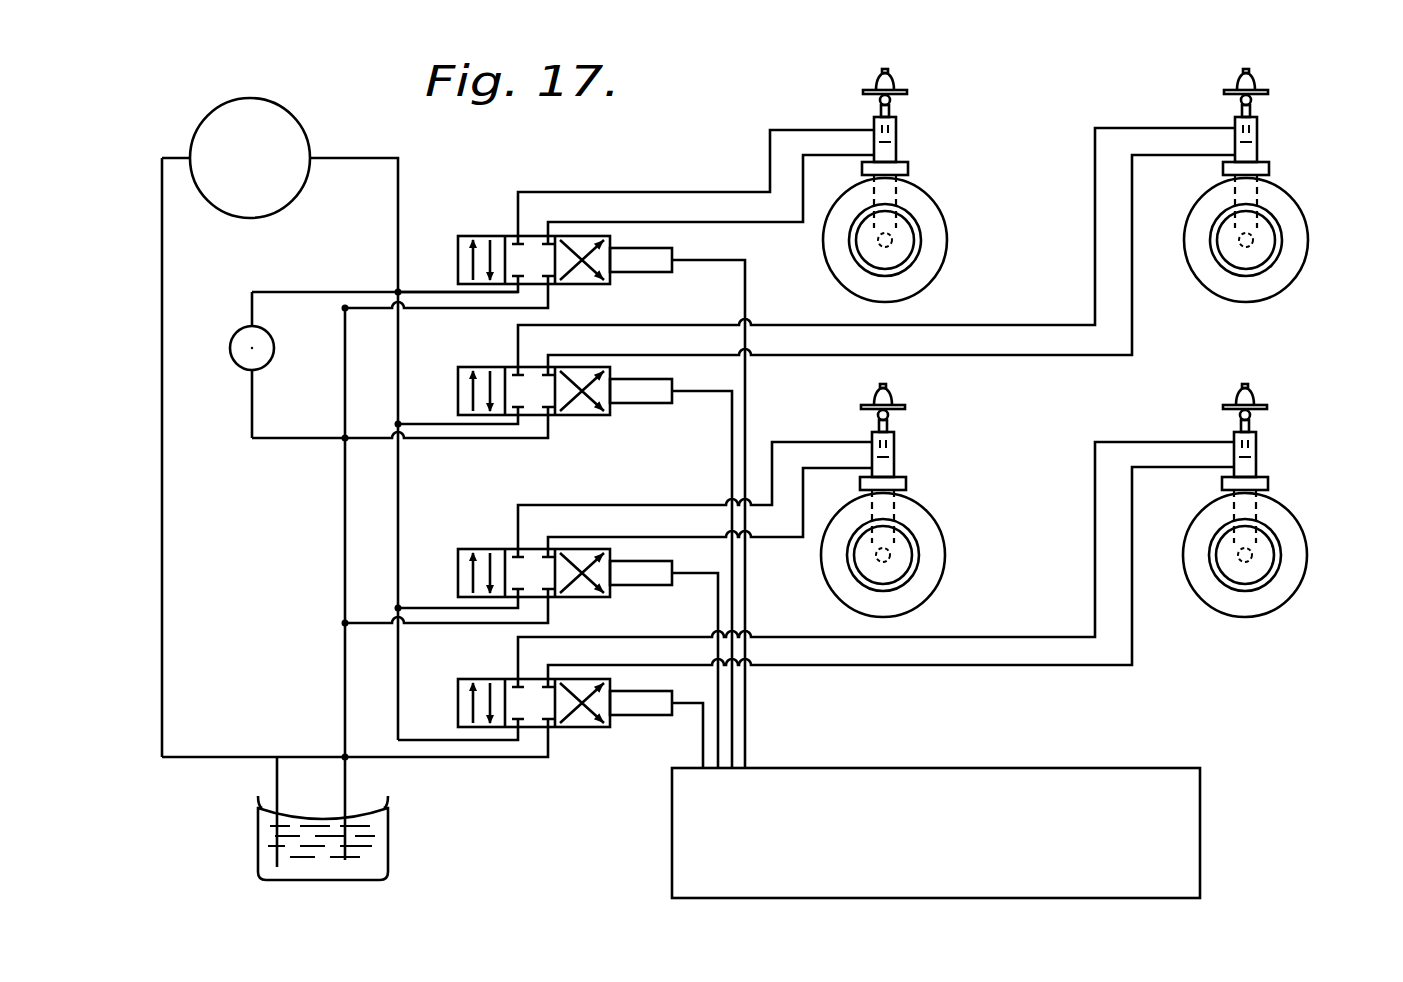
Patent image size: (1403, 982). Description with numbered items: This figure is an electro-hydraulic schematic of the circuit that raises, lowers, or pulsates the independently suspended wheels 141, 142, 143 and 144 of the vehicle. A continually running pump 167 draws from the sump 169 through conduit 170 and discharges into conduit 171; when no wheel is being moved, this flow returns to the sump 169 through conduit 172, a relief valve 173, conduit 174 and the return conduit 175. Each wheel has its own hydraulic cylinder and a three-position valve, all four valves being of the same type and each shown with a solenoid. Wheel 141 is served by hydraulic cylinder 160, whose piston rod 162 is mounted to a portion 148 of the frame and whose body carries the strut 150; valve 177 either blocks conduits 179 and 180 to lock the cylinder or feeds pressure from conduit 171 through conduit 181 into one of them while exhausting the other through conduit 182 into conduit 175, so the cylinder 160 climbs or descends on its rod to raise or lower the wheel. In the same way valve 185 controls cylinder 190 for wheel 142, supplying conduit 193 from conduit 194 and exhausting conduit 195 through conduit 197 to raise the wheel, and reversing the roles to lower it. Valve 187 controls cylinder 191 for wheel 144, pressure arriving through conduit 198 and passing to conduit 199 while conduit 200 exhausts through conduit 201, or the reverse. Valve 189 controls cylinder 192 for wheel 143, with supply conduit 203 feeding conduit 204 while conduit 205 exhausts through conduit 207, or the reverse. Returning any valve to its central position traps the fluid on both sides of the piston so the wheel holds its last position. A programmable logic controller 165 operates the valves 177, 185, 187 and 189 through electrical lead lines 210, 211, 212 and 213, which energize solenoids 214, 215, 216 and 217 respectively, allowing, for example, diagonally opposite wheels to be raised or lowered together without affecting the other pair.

The wheel 141 is at (1300, 243).
The wheel 142 is at (940, 243).
The wheel 143 is at (1300, 556).
The wheel 144 is at (938, 556).
The portion of frame 148 is at (893, 80).
The strut 150 is at (922, 192).
The hydraulic cylinder 160 is at (1258, 133).
The piston rod 162 is at (880, 105).
The programmable logic controller 165 is at (1203, 776).
The pump 167 is at (300, 124).
The sump 169 is at (258, 860).
The conduit 170 is at (163, 492).
The conduit 171 is at (398, 182).
The conduit 172 is at (326, 292).
The relief valve 173 is at (230, 348).
The conduit 174 is at (315, 440).
The conduit 175 is at (345, 576).
The valve 177 is at (582, 416).
The conduit 179 is at (1056, 324).
The conduit 180 is at (1045, 355).
The conduit 181 is at (432, 425).
The conduit 182 is at (440, 440).
The valve 185 is at (582, 285).
The valve 187 is at (580, 598).
The valve 189 is at (578, 728).
The cylinder 190 is at (897, 130).
The cylinder 191 is at (896, 445).
The cylinder 192 is at (1257, 455).
The conduit 193 is at (698, 170).
The conduit 194 is at (427, 290).
The conduit 195 is at (700, 222).
The conduit 197 is at (425, 310).
The conduit 198 is at (428, 607).
The conduit 199 is at (642, 505).
The conduit 200 is at (655, 537).
The conduit 201 is at (425, 624).
The conduit 203 is at (425, 740).
The conduit 204 is at (948, 637).
The conduit 205 is at (965, 667).
The conduit 207 is at (437, 757).
The electrical lead line 210 is at (732, 468).
The electrical lead line 211 is at (745, 292).
The electrical lead line 212 is at (718, 650).
The electrical lead line 213 is at (692, 768).
The solenoid 214 is at (652, 404).
The solenoid 215 is at (652, 272).
The solenoid 216 is at (645, 584).
The solenoid 217 is at (620, 716).